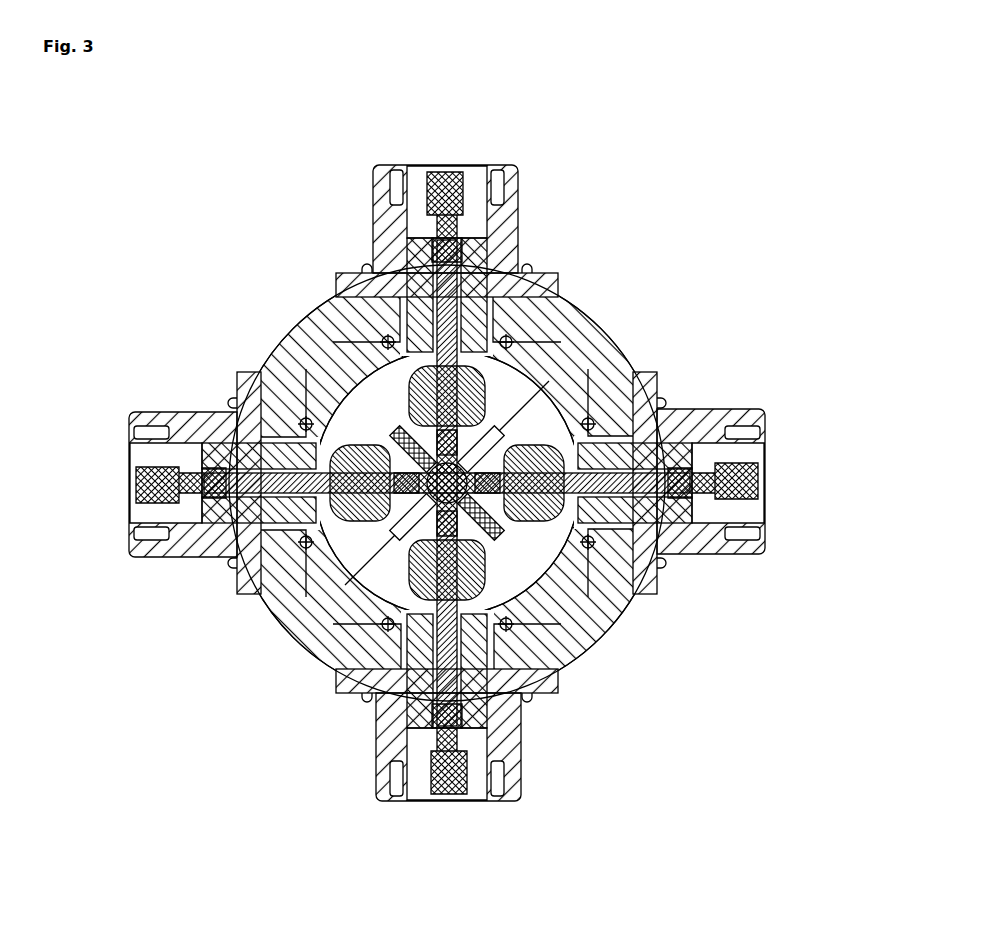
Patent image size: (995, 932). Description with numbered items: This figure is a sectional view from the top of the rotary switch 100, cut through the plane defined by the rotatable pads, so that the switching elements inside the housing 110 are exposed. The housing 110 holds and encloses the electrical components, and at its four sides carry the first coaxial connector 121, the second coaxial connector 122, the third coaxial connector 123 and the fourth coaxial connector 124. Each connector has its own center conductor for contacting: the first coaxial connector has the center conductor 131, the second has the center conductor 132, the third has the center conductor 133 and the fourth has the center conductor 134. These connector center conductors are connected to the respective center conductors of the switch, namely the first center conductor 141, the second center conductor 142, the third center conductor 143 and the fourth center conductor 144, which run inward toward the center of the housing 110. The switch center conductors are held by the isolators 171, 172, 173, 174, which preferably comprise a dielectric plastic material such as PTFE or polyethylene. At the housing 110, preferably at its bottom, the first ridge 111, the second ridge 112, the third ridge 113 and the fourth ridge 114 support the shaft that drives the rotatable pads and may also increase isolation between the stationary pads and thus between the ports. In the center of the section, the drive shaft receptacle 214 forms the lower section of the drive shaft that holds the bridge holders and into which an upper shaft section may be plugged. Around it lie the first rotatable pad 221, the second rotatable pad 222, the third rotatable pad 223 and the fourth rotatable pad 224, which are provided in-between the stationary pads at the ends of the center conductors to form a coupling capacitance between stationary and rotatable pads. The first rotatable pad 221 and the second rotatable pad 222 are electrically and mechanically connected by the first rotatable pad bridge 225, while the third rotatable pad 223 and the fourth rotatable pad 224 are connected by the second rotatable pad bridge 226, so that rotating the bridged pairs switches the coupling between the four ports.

The rotary switch 100 is at (633, 193).
The housing 110 is at (438, 481).
The first ridge 111 is at (563, 645).
The second ridge 112 is at (332, 612).
The third ridge 113 is at (338, 348).
The fourth ridge 114 is at (548, 425).
The first coaxial connector 121 is at (703, 412).
The second coaxial connector 122 is at (505, 743).
The third coaxial connector 123 is at (200, 412).
The fourth coaxial connector 124 is at (373, 222).
The center conductor 131 is at (742, 488).
The center conductor 132 is at (453, 797).
The center conductor 133 is at (152, 488).
The center conductor 134 is at (438, 172).
The first center conductor 141 is at (720, 466).
The second center conductor 142 is at (420, 737).
The third center conductor 143 is at (178, 465).
The fourth center conductor 144 is at (468, 240).
The isolator 171 is at (667, 560).
The isolator 172 is at (470, 715).
The isolator 173 is at (224, 553).
The isolator 174 is at (418, 254).
The drive shaft receptacle 214 is at (575, 440).
The first rotatable pad 221 is at (622, 614).
The second rotatable pad 222 is at (342, 647).
The third rotatable pad 223 is at (305, 420).
The fourth rotatable pad 224 is at (520, 380).
The first rotatable pad bridge 225 is at (603, 640).
The second rotatable pad bridge 226 is at (345, 392).